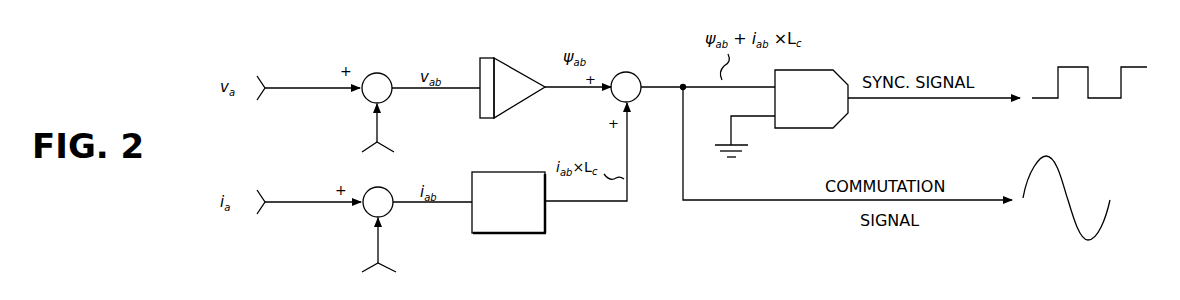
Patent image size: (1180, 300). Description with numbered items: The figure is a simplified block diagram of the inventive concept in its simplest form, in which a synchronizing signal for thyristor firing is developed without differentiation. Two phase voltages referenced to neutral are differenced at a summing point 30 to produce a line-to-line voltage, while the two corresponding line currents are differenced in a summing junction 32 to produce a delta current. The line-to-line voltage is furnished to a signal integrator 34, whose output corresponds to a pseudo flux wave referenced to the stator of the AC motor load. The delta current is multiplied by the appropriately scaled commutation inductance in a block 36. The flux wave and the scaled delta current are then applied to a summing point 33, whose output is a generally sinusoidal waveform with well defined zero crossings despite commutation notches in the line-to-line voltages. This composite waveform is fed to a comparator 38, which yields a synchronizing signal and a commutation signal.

The summing point 30 is at (386, 74).
The summing junction 32 is at (395, 213).
The summing point 33 is at (632, 72).
The signal integrator 34 is at (530, 72).
The commutation inductance block 36 is at (520, 168).
The comparator 38 is at (845, 120).